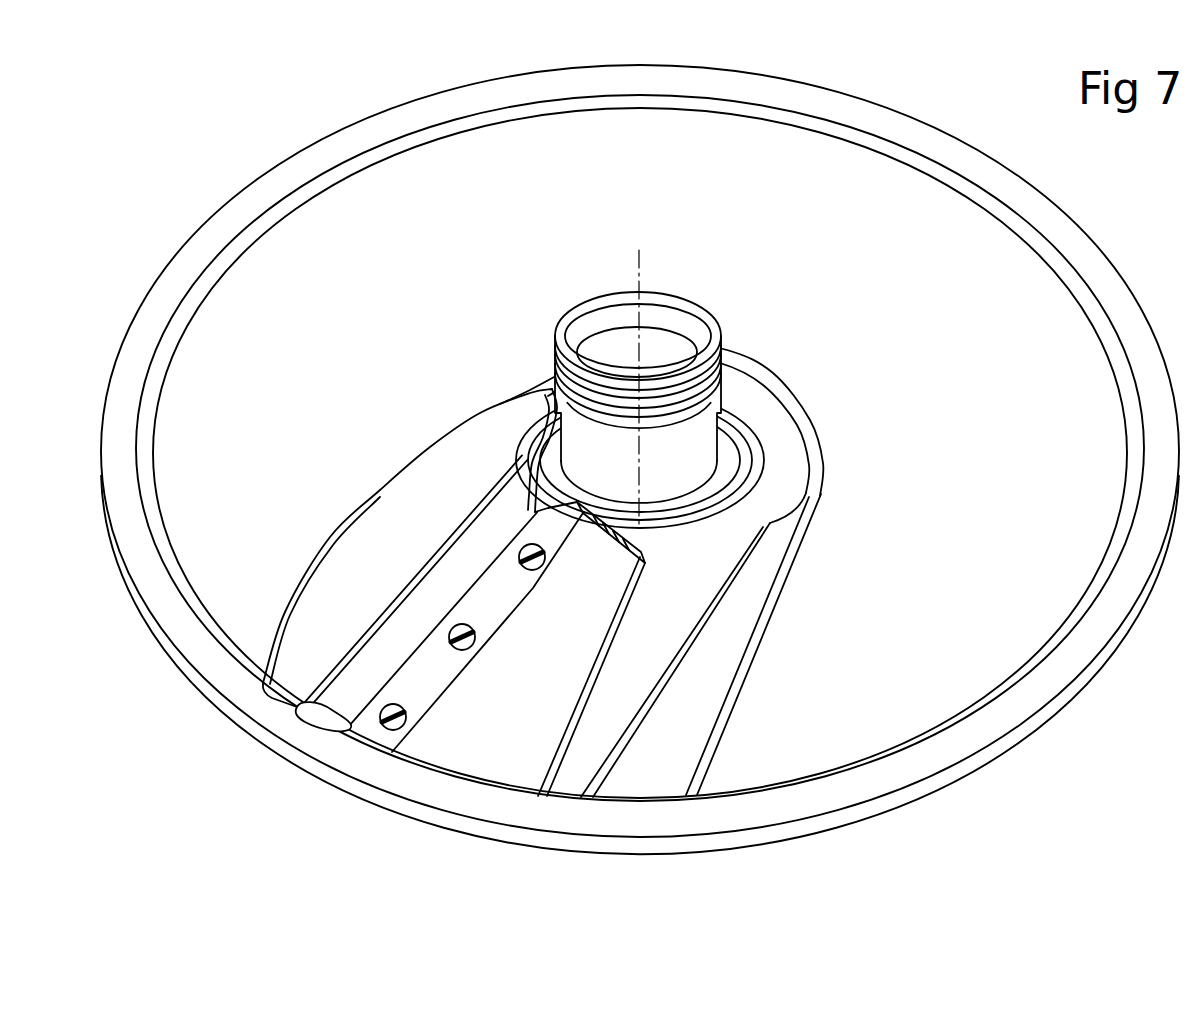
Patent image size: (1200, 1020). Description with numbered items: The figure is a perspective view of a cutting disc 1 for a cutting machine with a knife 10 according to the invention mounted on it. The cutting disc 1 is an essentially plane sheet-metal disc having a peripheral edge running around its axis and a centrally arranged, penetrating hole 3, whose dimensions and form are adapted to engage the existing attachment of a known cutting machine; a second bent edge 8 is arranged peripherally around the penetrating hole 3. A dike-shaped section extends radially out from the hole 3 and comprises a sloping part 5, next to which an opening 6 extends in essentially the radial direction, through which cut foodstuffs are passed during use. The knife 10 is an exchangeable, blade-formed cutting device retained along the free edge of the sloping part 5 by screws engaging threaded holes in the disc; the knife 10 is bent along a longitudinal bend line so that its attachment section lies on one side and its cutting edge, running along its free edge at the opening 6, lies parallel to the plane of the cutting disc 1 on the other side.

The cutting disc 1 is at (289, 122).
The penetrating hole 3 is at (601, 313).
The sloping part 5 is at (490, 757).
The opening 6 is at (266, 650).
The second bent edge 8 is at (752, 470).
The knife 10 is at (402, 494).